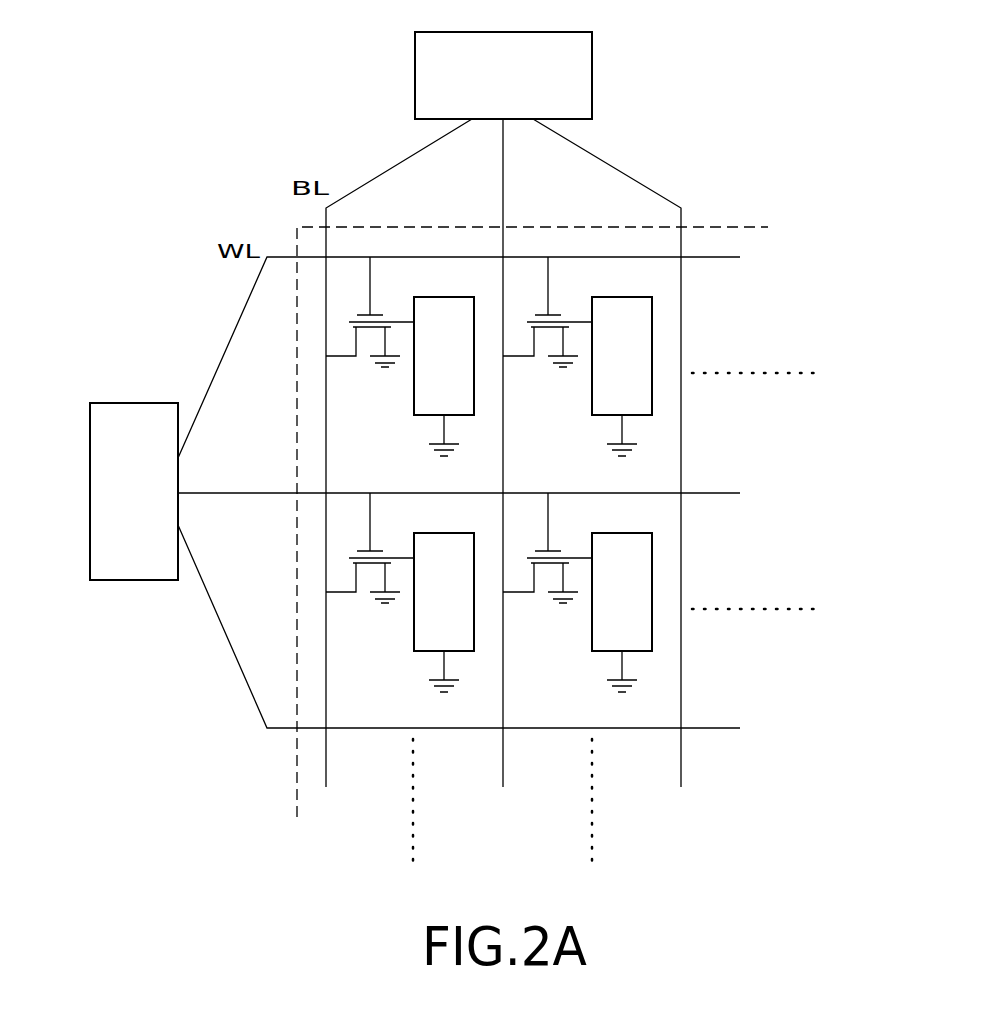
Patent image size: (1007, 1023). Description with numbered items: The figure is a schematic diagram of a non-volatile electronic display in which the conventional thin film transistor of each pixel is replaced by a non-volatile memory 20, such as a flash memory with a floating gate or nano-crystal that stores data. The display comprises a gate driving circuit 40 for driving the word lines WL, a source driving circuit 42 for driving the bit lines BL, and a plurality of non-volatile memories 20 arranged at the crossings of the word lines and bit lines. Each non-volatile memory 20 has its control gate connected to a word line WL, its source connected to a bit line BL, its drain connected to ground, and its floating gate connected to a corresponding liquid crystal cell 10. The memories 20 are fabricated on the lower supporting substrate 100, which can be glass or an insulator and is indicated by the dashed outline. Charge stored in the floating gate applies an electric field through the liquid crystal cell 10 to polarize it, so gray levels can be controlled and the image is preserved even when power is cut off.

The liquid crystal cell 10 is at (600, 372).
The non-volatile memory 20 is at (565, 315).
The gate driving circuit 40 is at (133, 408).
The source driving circuit 42 is at (587, 75).
The lower supporting substrate 100 is at (713, 232).